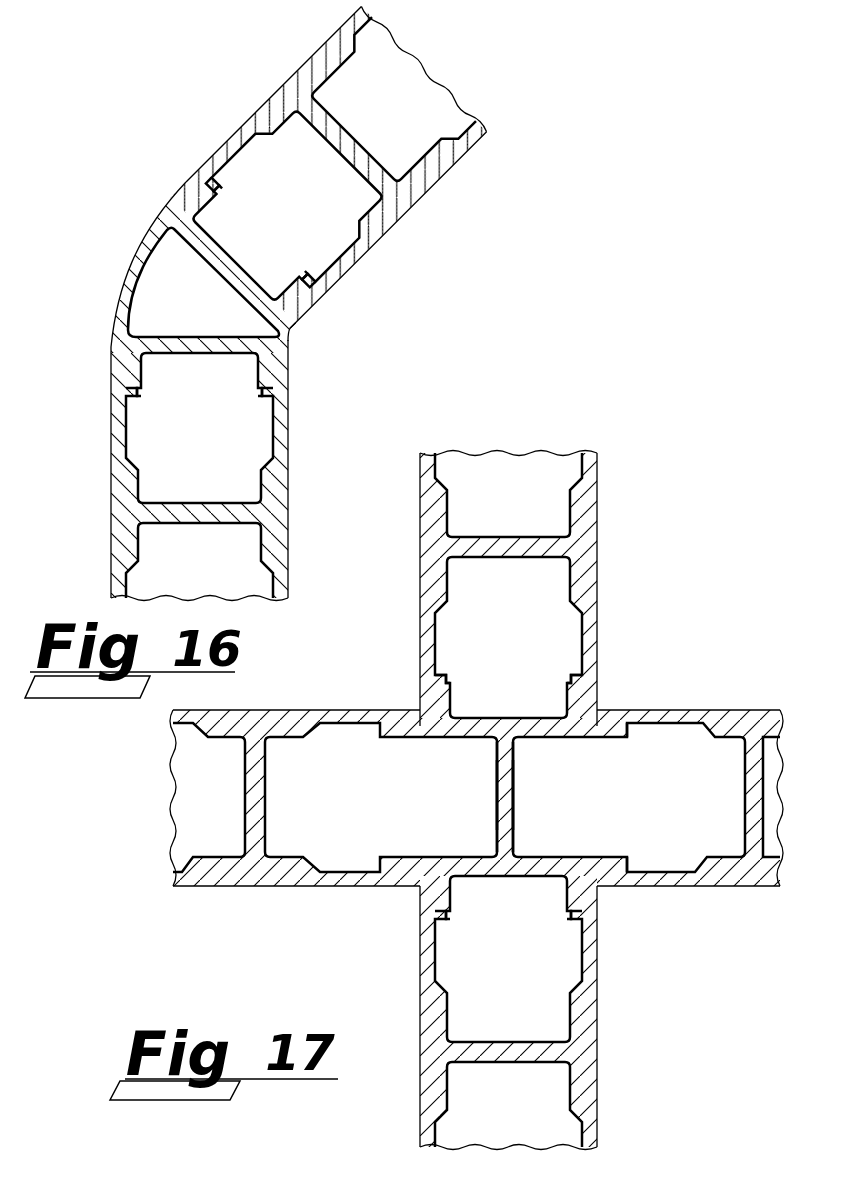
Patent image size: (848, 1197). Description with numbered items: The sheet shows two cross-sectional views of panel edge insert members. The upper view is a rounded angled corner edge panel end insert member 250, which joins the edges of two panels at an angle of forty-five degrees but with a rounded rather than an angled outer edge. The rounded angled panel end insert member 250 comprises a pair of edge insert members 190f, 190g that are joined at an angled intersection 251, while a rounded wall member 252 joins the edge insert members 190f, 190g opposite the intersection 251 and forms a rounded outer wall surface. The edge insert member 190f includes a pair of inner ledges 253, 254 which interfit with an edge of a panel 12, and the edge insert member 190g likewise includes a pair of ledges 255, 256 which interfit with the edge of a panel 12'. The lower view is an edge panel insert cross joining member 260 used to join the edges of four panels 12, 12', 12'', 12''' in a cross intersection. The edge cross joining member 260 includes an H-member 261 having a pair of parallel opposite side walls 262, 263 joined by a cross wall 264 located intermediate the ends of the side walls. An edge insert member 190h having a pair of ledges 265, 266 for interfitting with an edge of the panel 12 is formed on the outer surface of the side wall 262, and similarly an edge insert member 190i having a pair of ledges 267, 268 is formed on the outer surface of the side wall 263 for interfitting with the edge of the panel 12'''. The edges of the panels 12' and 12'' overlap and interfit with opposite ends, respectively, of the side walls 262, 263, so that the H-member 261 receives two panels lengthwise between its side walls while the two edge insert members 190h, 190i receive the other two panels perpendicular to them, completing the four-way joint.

In FIG. 16, the panel 12 is at (181, 470).
In FIG. 17, the panel 12 is at (504, 589).
In FIG. 16, the panel 12' is at (327, 167).
In FIG. 17, the panel 12' is at (337, 766).
In FIG. 17, the panel 12'' is at (644, 766).
In FIG. 17, the panel 12''' is at (510, 1013).
In FIG. 16, the edge insert member 190f is at (200, 358).
In FIG. 16, the edge insert member 190g is at (245, 261).
In FIG. 17, the edge insert member 190h is at (494, 715).
In FIG. 17, the edge insert member 190i is at (505, 879).
In FIG. 16, the rounded angled corner edge panel end insert member 250 is at (192, 276).
In FIG. 16, the angled intersection 251 is at (293, 341).
In FIG. 16, the rounded wall member 252 is at (123, 297).
In FIG. 16, the inner ledge 253 is at (134, 384).
In FIG. 16, the inner ledge 254 is at (266, 384).
In FIG. 16, the ledge 255 is at (210, 200).
In FIG. 16, the ledge 256 is at (302, 282).
In FIG. 17, the edge panel insert cross joining member 260 is at (500, 797).
In FIG. 17, the H-member 261 is at (517, 833).
In FIG. 17, the side wall 262 is at (618, 739).
In FIG. 17, the side wall 263 is at (609, 857).
In FIG. 17, the cross wall 264 is at (505, 793).
In FIG. 17, the ledge 265 is at (570, 690).
In FIG. 17, the ledge 266 is at (450, 690).
In FIG. 17, the ledge 267 is at (450, 915).
In FIG. 17, the ledge 268 is at (568, 915).